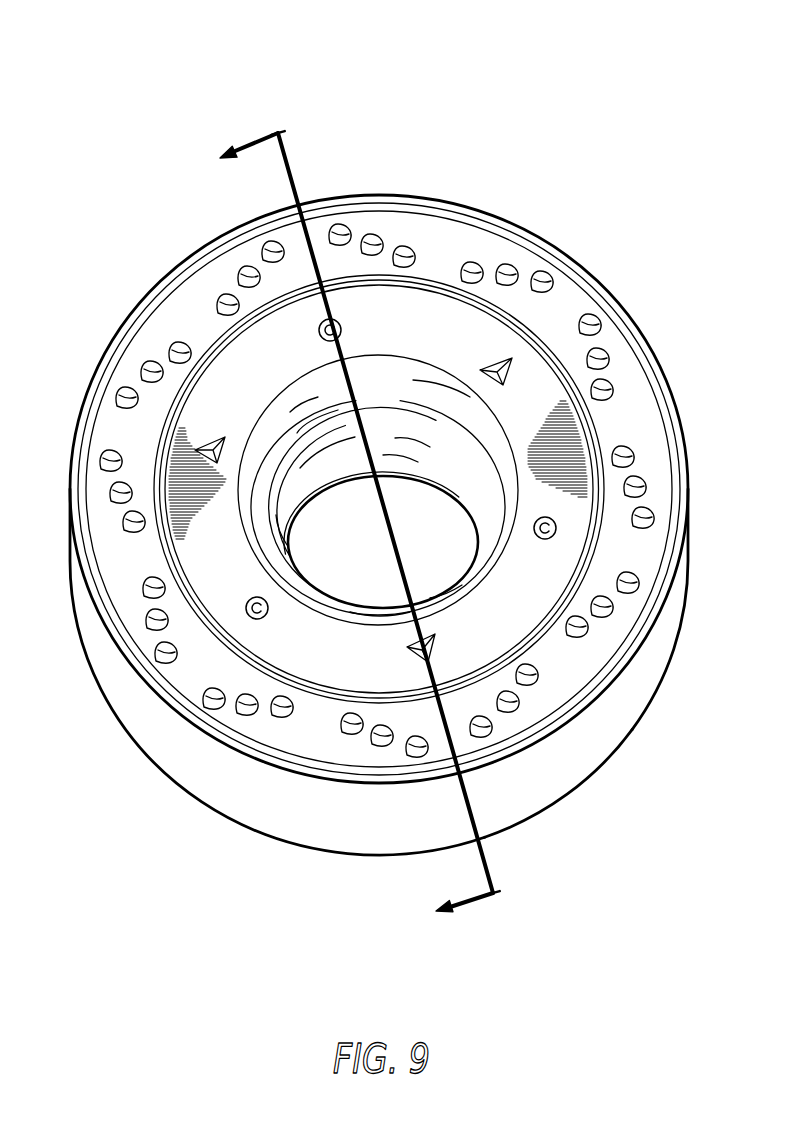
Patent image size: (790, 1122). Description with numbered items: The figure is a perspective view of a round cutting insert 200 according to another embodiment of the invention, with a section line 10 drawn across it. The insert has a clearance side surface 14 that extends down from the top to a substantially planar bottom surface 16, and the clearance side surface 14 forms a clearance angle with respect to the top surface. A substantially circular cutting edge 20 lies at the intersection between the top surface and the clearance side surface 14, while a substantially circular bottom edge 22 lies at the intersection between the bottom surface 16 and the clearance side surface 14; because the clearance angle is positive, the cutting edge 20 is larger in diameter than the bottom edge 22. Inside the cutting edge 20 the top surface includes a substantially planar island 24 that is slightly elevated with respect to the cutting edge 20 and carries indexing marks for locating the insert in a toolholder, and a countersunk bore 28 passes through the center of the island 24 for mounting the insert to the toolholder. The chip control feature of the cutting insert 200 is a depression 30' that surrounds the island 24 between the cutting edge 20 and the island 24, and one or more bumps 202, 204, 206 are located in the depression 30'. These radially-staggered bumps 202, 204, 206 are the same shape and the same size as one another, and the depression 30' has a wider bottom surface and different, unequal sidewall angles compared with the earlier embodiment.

The round cutting insert 10 is at (378, 510).
The clearance side surface 14 is at (628, 684).
The bottom surface 16 is at (588, 785).
The cutting edge 20 is at (653, 632).
The bottom edge 22 is at (613, 743).
The island 24 is at (240, 385).
The countersunk bore 28 is at (388, 425).
The depression 30' is at (377, 442).
The round cutting insert 200 is at (620, 76).
The bump 202 is at (592, 322).
The bump 204 is at (598, 358).
The bump 206 is at (603, 388).